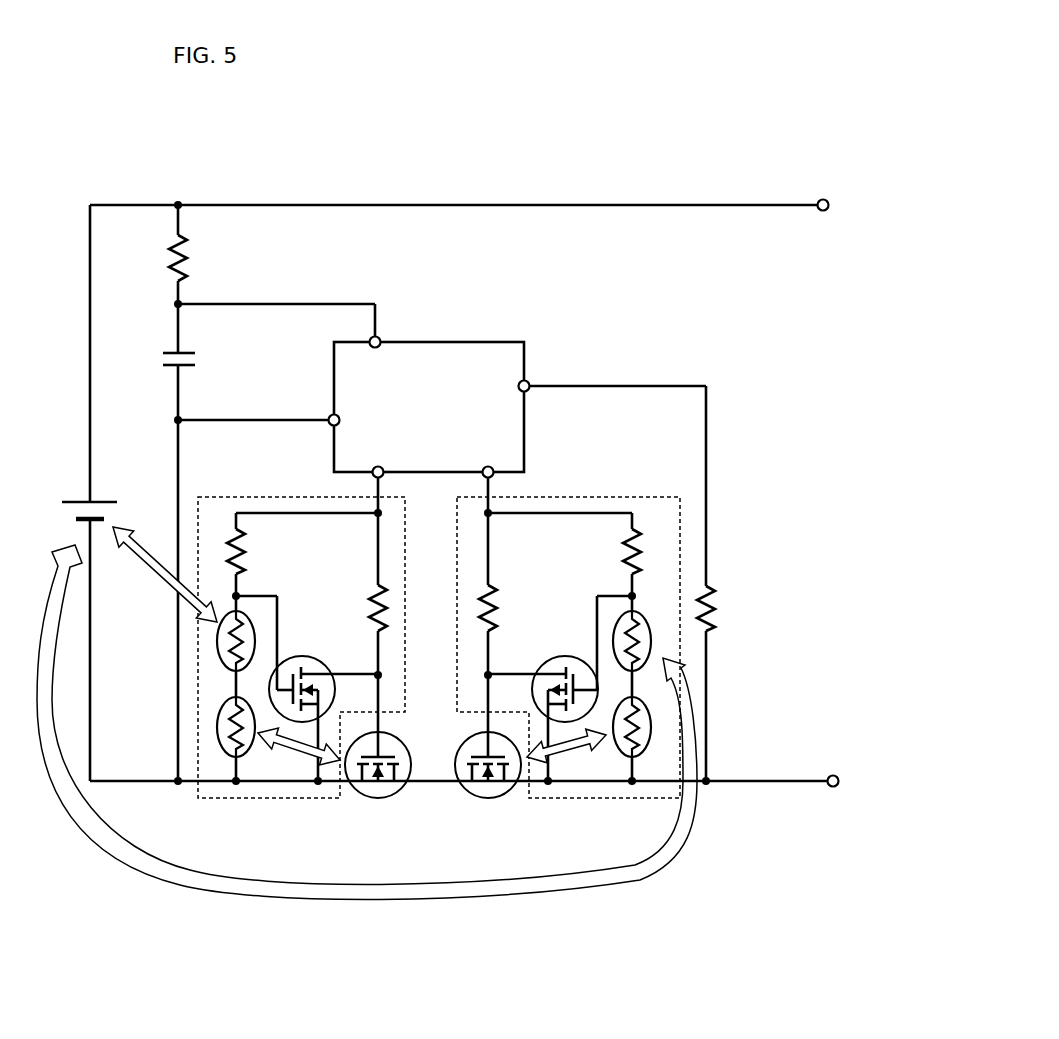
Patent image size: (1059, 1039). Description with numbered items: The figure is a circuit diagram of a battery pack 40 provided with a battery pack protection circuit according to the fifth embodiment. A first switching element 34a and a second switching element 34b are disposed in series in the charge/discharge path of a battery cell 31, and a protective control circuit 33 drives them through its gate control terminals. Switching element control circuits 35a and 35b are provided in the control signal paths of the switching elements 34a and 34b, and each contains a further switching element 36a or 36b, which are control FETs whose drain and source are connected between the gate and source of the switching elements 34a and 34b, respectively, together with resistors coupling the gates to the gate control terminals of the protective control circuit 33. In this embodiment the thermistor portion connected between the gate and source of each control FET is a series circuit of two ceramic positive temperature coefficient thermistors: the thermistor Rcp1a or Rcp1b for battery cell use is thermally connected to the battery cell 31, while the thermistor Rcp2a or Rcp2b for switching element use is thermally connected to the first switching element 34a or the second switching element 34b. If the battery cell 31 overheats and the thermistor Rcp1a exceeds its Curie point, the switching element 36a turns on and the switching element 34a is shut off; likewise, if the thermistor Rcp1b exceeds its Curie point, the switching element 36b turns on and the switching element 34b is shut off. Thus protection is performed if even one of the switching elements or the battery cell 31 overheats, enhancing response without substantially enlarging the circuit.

The battery pack 40 is at (656, 126).
The battery cell 31 is at (58, 512).
The protective control circuit 33 is at (527, 342).
The first switching element 34a is at (378, 800).
The second switching element 34b is at (488, 800).
The switching element control circuit 35a is at (250, 497).
The switching element control circuit 35b is at (650, 497).
The switching element 36a is at (323, 707).
The switching element 36b is at (543, 707).
The ceramic positive temperature coefficient thermistor for battery cell use Rcp1a is at (217, 641).
The ceramic positive temperature coefficient thermistor for switching element use Rcp2a is at (222, 752).
The ceramic positive temperature coefficient thermistor for battery cell use Rcp1b is at (615, 628).
The ceramic positive temperature coefficient thermistor for switching element use Rcp2b is at (620, 753).